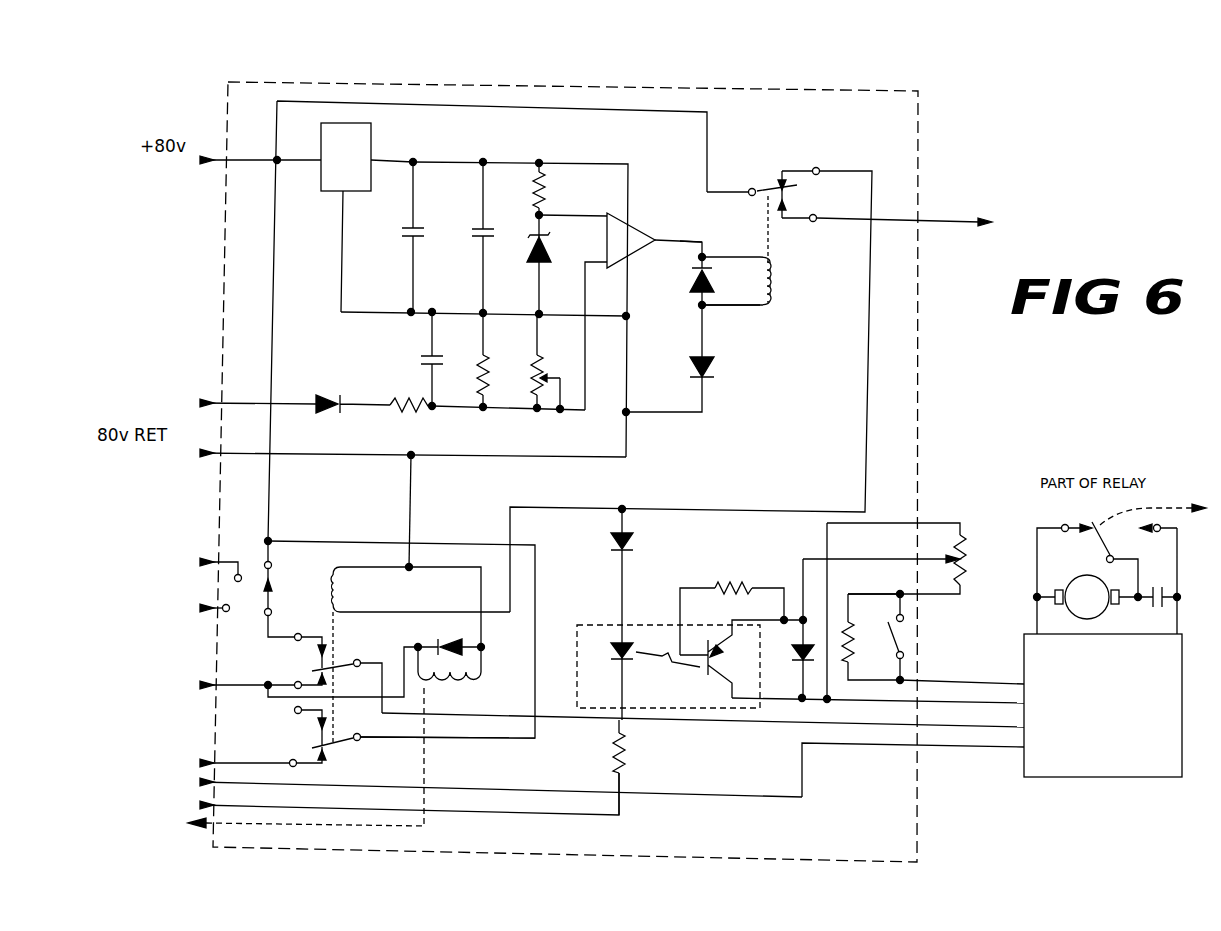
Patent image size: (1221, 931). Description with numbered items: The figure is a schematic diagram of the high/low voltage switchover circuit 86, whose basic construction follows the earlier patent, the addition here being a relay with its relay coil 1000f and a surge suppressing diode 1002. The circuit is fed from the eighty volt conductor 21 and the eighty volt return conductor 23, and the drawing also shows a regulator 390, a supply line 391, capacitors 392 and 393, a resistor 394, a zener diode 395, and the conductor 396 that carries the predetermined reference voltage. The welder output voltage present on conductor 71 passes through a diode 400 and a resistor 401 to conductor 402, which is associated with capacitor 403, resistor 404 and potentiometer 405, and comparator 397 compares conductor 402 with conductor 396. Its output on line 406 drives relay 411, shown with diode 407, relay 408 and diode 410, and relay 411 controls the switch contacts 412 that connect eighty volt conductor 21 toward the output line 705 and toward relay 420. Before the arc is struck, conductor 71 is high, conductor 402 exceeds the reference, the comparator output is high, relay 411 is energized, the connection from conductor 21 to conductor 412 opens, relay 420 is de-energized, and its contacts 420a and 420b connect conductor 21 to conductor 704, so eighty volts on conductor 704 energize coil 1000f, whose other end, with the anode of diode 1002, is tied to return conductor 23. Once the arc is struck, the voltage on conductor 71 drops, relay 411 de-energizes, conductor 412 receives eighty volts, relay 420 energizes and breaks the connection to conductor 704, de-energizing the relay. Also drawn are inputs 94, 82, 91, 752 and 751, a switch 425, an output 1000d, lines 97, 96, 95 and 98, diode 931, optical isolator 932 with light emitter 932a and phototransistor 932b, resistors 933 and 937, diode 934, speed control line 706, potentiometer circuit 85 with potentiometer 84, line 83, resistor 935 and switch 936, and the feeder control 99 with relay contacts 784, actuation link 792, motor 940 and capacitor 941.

The high/low voltage switchover circuit 86 is at (228, 100).
The 80 volt conductor 21 is at (224, 160).
The 15V voltage regulator 390 is at (321, 158).
The regulated supply line 391 is at (396, 160).
The filter capacitor 392 is at (404, 232).
The filter capacitor 393 is at (480, 232).
The resistor 394 is at (536, 176).
The zener diode 395 is at (536, 265).
The reference voltage conductor 396 is at (556, 218).
The comparator 397 is at (636, 234).
The comparator output line 406 is at (702, 244).
The diode 407 is at (690, 287).
The relay 411 is at (772, 283).
The relay 408 is at (737, 305).
The diode 410 is at (686, 369).
The conductor 412 is at (820, 171).
The output line 705 is at (936, 221).
The conductor 71 is at (212, 402).
The diode 400 is at (330, 397).
The resistor 401 is at (412, 403).
The conductor 402 is at (460, 410).
The capacitor 403 is at (422, 361).
The resistor 404 is at (474, 363).
The potentiometer 405 is at (534, 367).
The 80 volt return conductor 23 is at (204, 457).
The input line 94 is at (210, 560).
The input line 82 is at (202, 611).
The switch 425 is at (272, 599).
The relay 420 is at (342, 601).
The surge suppressing diode 1002 is at (446, 640).
The relay coil 1000f is at (473, 678).
The input line 91 is at (210, 689).
The relay contacts 420b is at (295, 760).
The relay contacts 420a is at (366, 747).
The conductor 704 is at (196, 762).
The input line 752 is at (198, 782).
The input line 751 is at (198, 805).
The output line 1000d is at (206, 823).
The power line 97 is at (806, 722).
The speed line 96 is at (848, 708).
The speed line 95 is at (926, 684).
The power line 98 is at (803, 794).
The resistor 937 is at (624, 745).
The diode 931 is at (632, 542).
The optical isolator 932 is at (612, 625).
The light emitting diode 932a is at (610, 656).
The phototransistor 932b is at (708, 677).
The resistor 933 is at (726, 585).
The diode 934 is at (790, 661).
The speed control line 706 is at (846, 563).
The speed potentiometer circuit 85 is at (940, 523).
The potentiometer 84 is at (965, 573).
The potentiometer line 83 is at (935, 594).
The resistor 935 is at (850, 646).
The switch 936 is at (890, 627).
The feeder control 99 is at (1024, 651).
The relay contacts 784 is at (1090, 522).
The relay actuation link 792 is at (1176, 508).
The feeder motor 940 is at (1104, 613).
The capacitor 941 is at (1167, 582).